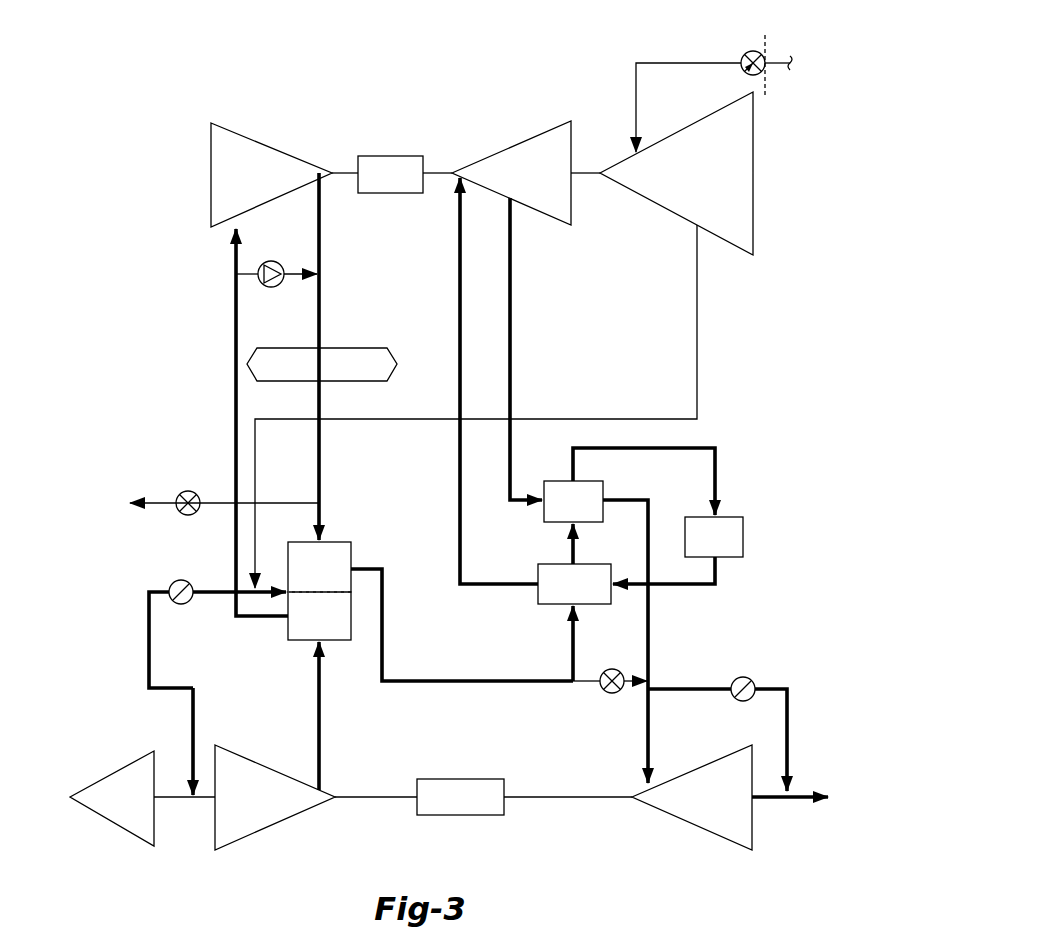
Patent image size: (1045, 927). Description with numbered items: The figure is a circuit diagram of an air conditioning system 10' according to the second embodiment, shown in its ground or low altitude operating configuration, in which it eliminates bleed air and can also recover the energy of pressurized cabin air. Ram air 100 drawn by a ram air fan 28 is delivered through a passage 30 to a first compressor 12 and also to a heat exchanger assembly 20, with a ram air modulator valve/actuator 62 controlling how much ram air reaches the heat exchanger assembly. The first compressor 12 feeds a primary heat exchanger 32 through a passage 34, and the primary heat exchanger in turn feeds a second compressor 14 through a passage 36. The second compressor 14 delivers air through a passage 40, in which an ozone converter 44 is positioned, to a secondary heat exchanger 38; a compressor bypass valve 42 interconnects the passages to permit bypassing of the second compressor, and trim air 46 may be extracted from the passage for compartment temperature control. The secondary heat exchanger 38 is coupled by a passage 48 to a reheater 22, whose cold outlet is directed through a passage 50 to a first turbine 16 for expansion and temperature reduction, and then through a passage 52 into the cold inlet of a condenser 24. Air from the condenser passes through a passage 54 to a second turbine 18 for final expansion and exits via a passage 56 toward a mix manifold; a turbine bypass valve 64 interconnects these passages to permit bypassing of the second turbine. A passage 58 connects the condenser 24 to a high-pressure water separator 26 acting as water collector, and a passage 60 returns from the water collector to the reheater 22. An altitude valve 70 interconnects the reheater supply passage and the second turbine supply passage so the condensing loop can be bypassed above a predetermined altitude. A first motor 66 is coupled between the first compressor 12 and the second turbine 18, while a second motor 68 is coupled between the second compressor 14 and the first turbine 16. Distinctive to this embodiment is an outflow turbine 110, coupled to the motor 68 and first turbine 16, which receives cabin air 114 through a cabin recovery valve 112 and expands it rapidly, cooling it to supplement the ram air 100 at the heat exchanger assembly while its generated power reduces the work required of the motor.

The air conditioning system 10' is at (156, 79).
The first compressor 12 is at (260, 832).
The second compressor 14 is at (262, 144).
The first turbine 16 is at (508, 147).
The second turbine 18 is at (690, 830).
The heat exchanger assembly 20 is at (292, 542).
The reheater 22 is at (548, 604).
The condenser 24 is at (553, 522).
The high-pressure water separator 26 is at (743, 530).
The ram air fan 28 is at (130, 835).
The passage 30 is at (170, 800).
The primary heat exchanger 32 is at (296, 641).
The passage 34 is at (320, 728).
The passage 36 is at (234, 362).
The secondary heat exchanger 38 is at (352, 556).
The passage 40 is at (321, 410).
The compressor bypass valve 42 is at (279, 262).
The ozone converter 44 is at (338, 348).
The trim air 46 is at (160, 506).
The passage 48 is at (465, 684).
The passage 50 is at (459, 468).
The passage 52 is at (510, 245).
The passage 54 is at (660, 689).
The passage 56 is at (772, 800).
The passage 58 is at (645, 448).
The passage 60 is at (715, 570).
The ram air modulator valve/actuator 62 is at (183, 580).
The turbine bypass valve 64 is at (752, 681).
The first motor 66 is at (446, 815).
The second motor 68 is at (385, 156).
The altitude valve 70 is at (608, 695).
The ram air 100 is at (120, 688).
The outflow turbine 110 is at (753, 229).
The cabin recovery valve 112 is at (750, 51).
The cabin air 114 is at (820, 42).